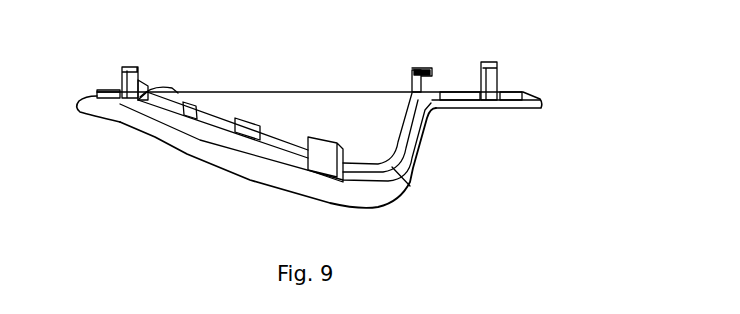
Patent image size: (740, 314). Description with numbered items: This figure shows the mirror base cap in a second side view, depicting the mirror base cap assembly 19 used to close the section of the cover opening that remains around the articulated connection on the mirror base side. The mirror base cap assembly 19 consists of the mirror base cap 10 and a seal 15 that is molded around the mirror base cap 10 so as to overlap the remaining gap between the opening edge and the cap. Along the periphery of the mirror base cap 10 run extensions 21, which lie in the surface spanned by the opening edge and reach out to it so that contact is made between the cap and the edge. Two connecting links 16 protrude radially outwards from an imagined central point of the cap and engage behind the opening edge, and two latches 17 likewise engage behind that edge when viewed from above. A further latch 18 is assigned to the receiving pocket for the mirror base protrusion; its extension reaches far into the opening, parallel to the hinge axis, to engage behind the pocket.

The mirror base cap 10 is at (318, 108).
The seal 15 is at (412, 140).
The connecting links 16 is at (140, 106).
The latches 17 is at (118, 70).
The latch 18 is at (417, 66).
The mirror base cap assembly 19 is at (541, 143).
The extensions 21 is at (217, 127).